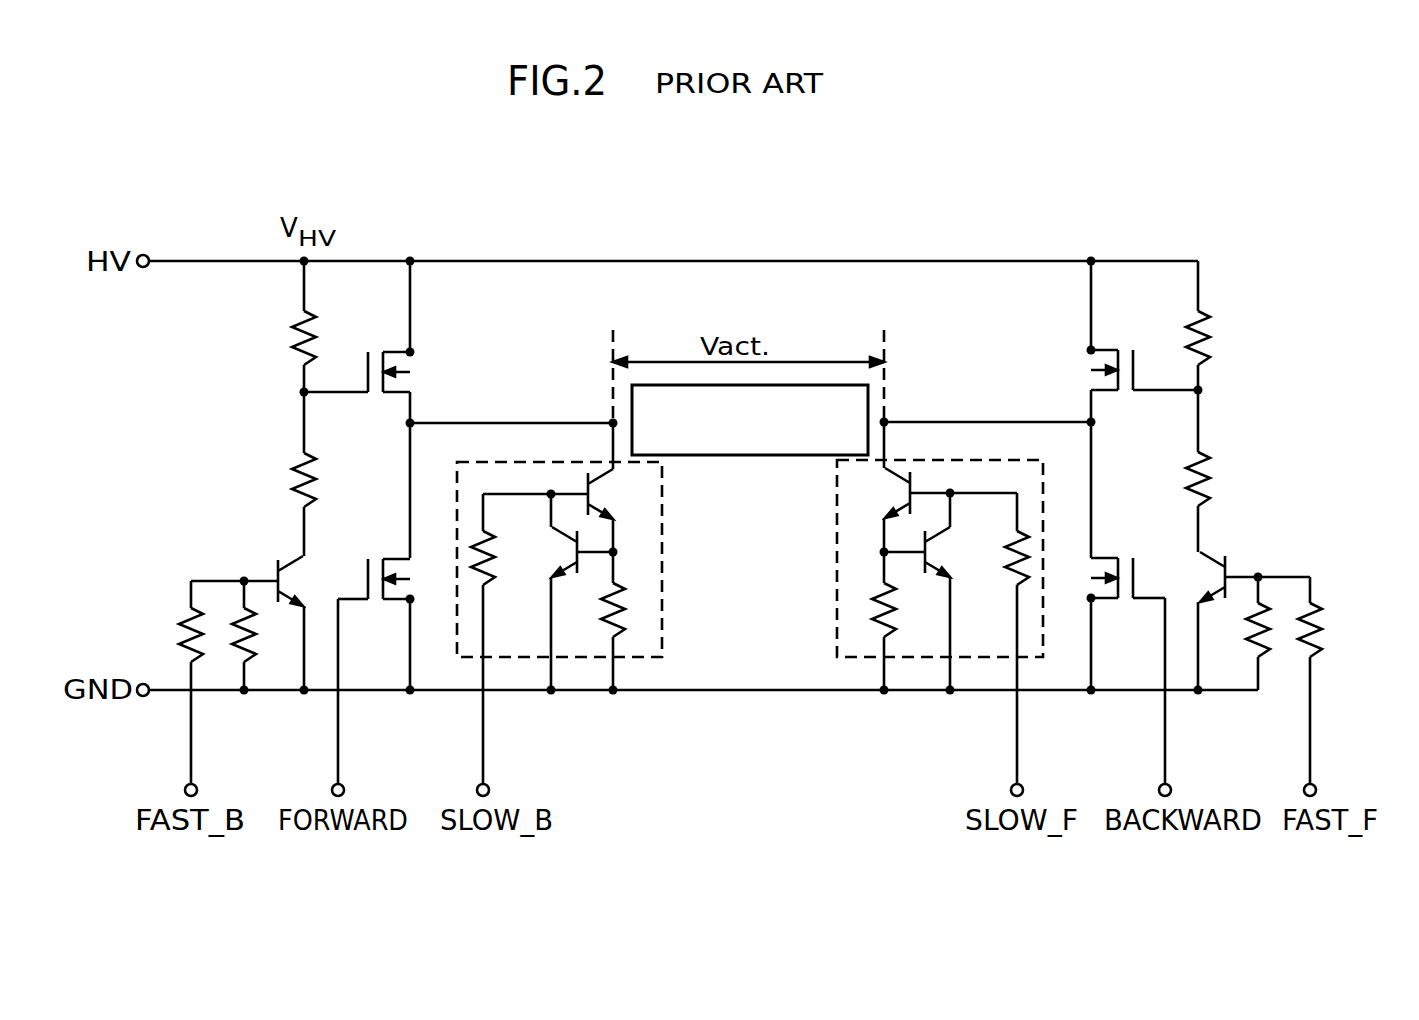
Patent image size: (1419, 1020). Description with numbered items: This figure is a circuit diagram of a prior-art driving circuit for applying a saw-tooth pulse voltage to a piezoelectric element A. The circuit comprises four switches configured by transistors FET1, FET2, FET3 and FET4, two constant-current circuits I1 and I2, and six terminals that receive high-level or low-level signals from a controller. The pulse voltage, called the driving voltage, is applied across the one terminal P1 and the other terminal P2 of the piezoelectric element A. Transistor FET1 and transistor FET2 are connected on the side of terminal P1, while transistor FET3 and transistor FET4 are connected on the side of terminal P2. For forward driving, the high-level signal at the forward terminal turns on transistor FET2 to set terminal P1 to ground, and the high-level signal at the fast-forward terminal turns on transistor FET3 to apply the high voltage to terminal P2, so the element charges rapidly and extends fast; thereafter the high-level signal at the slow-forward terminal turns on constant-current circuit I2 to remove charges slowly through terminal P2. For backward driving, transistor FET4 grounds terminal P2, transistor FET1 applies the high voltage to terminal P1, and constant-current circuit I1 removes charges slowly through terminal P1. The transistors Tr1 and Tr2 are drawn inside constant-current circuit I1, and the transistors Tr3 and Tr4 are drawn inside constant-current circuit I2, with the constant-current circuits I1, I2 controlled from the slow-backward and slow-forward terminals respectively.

The transistor FET1 is at (376, 366).
The transistor FET2 is at (393, 583).
The transistor FET3 is at (1129, 360).
The transistor FET4 is at (1112, 567).
The first transistor Tr1 is at (601, 498).
The second transistor Tr2 is at (565, 552).
The third transistor Tr3 is at (901, 493).
The fourth transistor Tr4 is at (936, 551).
The constant-current circuit I1 is at (540, 460).
The constant-current circuit I2 is at (1005, 460).
The terminal P1 is at (613, 423).
The terminal P2 is at (884, 422).
The piezoelectric element A is at (782, 456).